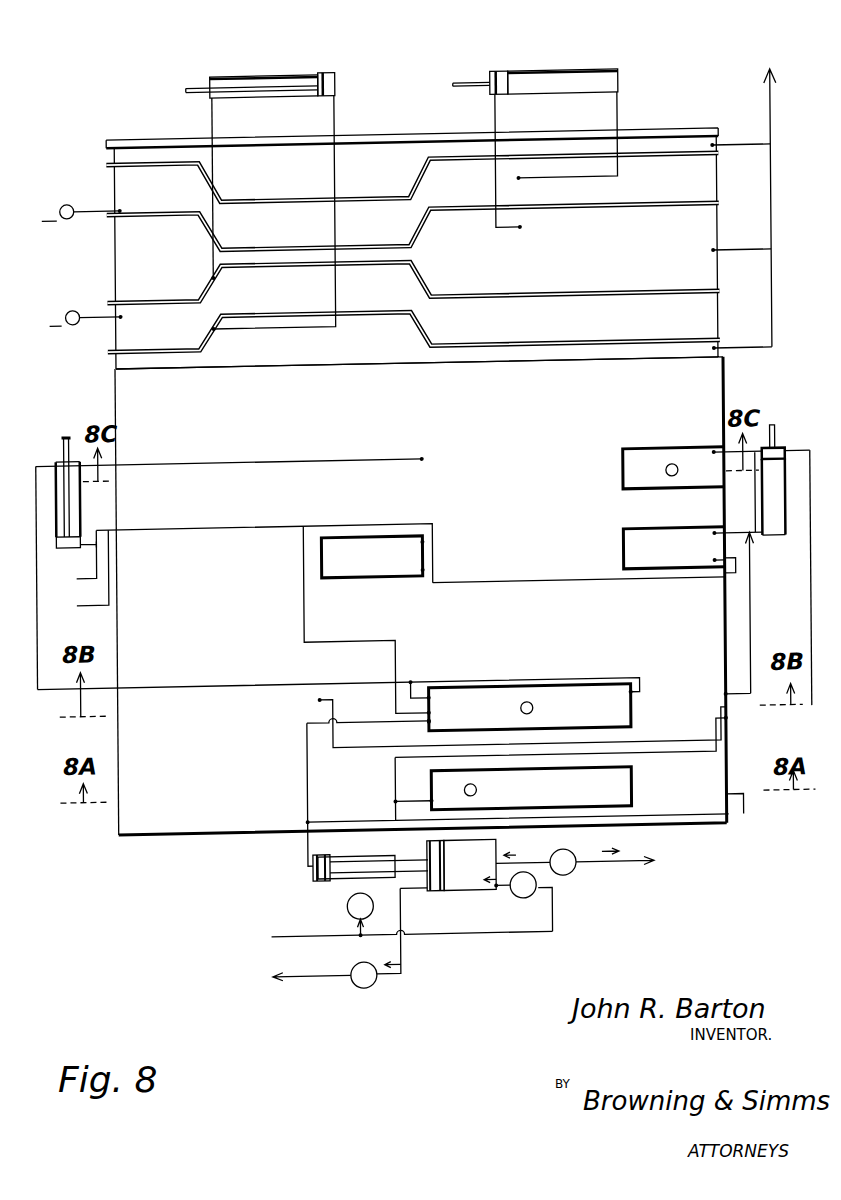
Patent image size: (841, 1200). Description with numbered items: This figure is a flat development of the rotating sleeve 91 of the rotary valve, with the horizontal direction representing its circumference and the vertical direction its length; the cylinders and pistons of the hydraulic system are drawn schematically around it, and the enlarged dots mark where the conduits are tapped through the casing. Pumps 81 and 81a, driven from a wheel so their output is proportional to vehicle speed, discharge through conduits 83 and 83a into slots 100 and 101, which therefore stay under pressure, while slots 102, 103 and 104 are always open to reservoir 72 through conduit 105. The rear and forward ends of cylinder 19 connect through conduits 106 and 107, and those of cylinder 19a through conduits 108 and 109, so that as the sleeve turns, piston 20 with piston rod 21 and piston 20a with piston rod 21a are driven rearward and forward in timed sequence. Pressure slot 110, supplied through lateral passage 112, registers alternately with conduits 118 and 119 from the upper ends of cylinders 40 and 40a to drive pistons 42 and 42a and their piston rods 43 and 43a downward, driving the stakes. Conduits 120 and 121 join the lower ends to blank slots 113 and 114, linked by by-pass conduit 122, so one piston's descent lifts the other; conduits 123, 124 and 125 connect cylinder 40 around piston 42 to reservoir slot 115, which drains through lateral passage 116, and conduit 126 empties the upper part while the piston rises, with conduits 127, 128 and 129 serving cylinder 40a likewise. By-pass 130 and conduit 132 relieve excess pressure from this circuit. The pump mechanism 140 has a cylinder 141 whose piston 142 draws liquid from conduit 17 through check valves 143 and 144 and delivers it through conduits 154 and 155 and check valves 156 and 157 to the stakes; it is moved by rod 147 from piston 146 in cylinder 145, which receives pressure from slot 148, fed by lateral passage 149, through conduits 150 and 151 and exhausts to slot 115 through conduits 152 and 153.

The conduit 17 is at (531, 941).
The cylinder 19 is at (541, 79).
The cylinder 19a is at (252, 79).
The piston 20 is at (501, 79).
The piston 20a is at (327, 78).
The piston rod 21 is at (472, 90).
The piston rod 21a is at (190, 91).
The cylinder 40 is at (56, 461).
The cylinder 40a is at (772, 550).
The piston 42 is at (62, 548).
The piston 42a is at (786, 460).
The piston rod 43 is at (64, 436).
The piston rod 43a is at (779, 437).
The reservoir 72 is at (765, 197).
The positive displacement pump 81 is at (74, 220).
The positive displacement pump 81a is at (78, 325).
The conduit 83 is at (86, 206).
The conduit 83a is at (93, 312).
The sleeve 91 is at (115, 387).
The slot 100 is at (466, 202).
The slot 101 is at (487, 340).
The slot 102 is at (404, 173).
The slot 103 is at (478, 272).
The slot 104 is at (410, 366).
The conduit 105 is at (745, 157).
The conduit 106 is at (499, 120).
The conduit 107 is at (622, 121).
The conduit 108 is at (215, 120).
The conduit 109 is at (338, 112).
The pressure slot 110 is at (655, 496).
The lateral passage 112 is at (671, 475).
The blank slot 113 is at (371, 570).
The blank slot 114 is at (680, 569).
The reservoir slot 115 is at (597, 722).
The lateral passage 116 is at (526, 710).
The conduit 118 is at (264, 464).
The conduit 119 is at (723, 460).
The conduit 120 is at (245, 529).
The conduit 121 is at (738, 543).
The by-pass conduit 122 is at (514, 589).
The conduit 123 is at (302, 607).
The conduit 124 is at (162, 688).
The conduit 125 is at (410, 690).
The conduit 126 is at (486, 688).
The conduit 127 is at (752, 604).
The conduit 128 is at (806, 638).
The conduit 129 is at (670, 752).
The by-pass 130 is at (88, 580).
The conduit 132 is at (100, 612).
The pump mechanism 140 is at (525, 855).
The cylinder 141 is at (494, 851).
The piston 142 is at (441, 861).
The check valve 143 is at (343, 912).
The check valve 144 is at (509, 900).
The cylinder 145 is at (309, 873).
The piston 146 is at (322, 886).
The rod 147 is at (372, 862).
The pressure slot 148 is at (595, 804).
The lateral passage 149 is at (474, 797).
The conduit 150 is at (680, 826).
The conduit 151 is at (392, 805).
The conduit 152 is at (662, 763).
The conduit 153 is at (304, 757).
The conduit 154 is at (326, 981).
The conduit 155 is at (618, 876).
The check valve 156 is at (352, 968).
The check valve 157 is at (572, 862).